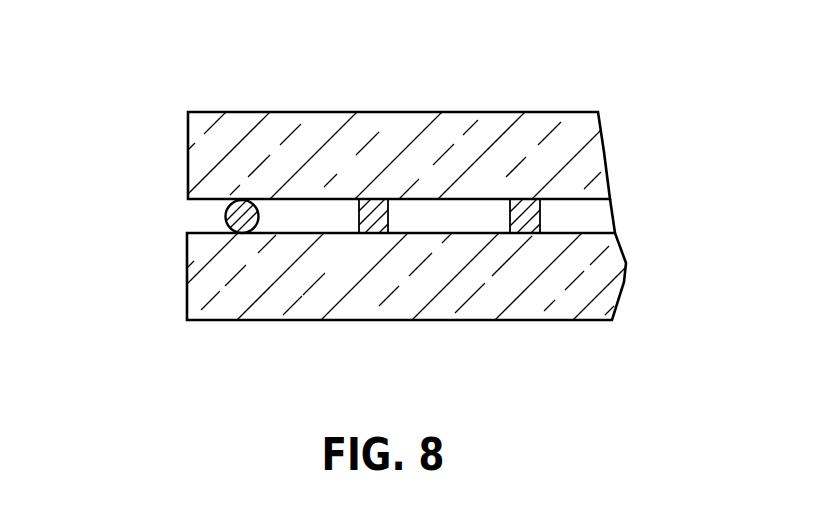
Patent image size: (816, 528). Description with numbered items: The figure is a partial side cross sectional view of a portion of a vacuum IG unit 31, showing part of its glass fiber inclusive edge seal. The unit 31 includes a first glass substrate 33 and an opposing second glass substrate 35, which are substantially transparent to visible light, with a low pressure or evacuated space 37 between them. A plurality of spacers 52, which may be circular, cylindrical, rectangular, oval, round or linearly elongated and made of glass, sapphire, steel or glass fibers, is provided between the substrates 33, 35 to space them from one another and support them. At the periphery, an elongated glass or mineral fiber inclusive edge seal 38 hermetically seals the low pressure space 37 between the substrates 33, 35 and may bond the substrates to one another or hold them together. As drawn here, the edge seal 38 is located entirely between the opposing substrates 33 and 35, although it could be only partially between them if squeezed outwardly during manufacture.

The vacuum IG unit 31 is at (127, 183).
The first glass substrate 33 is at (398, 299).
The second glass substrate 35 is at (398, 132).
The low pressure space 37 is at (479, 222).
The edge seal 38 is at (225, 221).
The spacers 52 is at (357, 220).